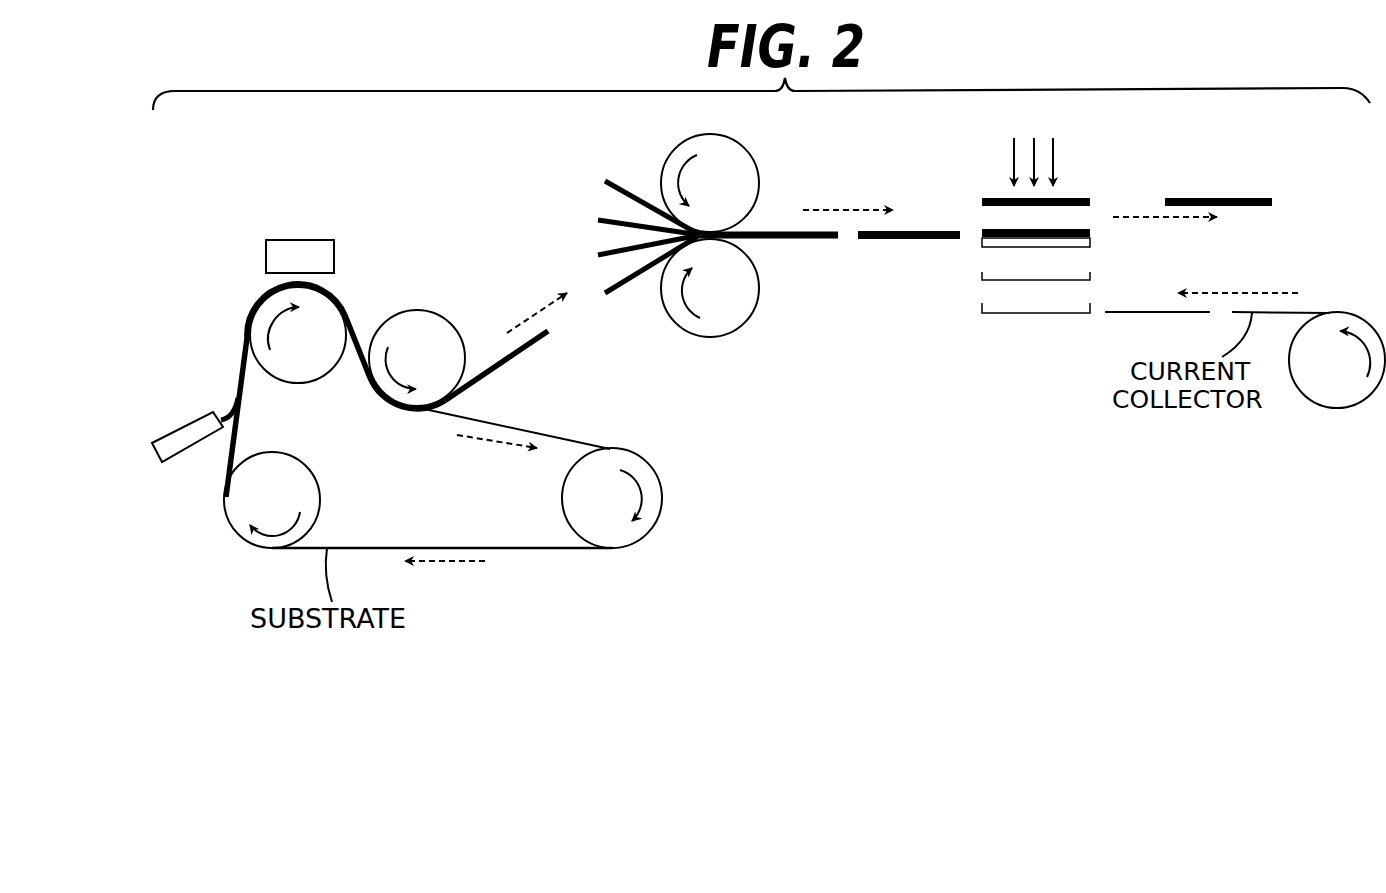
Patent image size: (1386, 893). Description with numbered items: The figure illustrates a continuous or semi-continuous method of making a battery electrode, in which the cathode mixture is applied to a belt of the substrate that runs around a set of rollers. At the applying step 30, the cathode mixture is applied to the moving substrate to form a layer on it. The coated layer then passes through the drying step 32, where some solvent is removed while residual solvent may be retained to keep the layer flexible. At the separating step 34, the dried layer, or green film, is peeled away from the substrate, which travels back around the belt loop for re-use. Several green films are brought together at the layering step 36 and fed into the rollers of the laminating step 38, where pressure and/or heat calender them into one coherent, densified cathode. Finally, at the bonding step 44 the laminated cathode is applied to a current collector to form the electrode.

The applying step 30 is at (213, 398).
The drying step 32 is at (305, 240).
The separating step 34 is at (497, 401).
The layering step 36 is at (632, 302).
The laminating step 38 is at (769, 198).
The bonding step 44 is at (1087, 170).